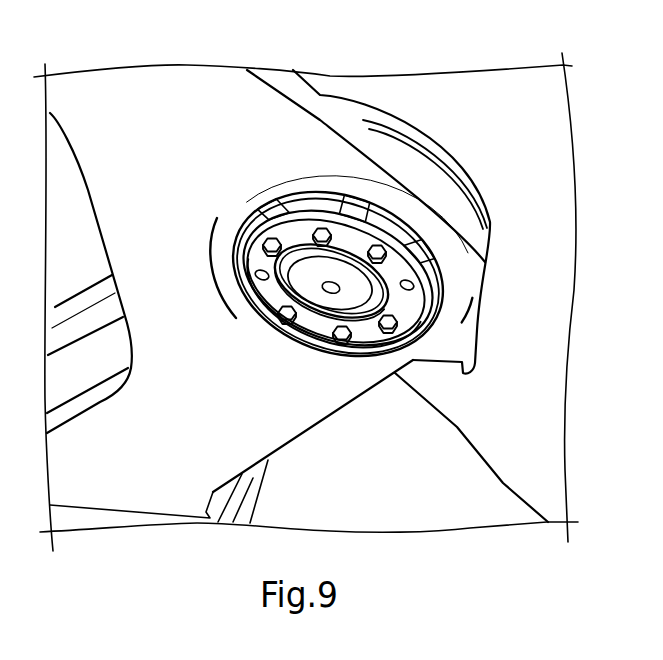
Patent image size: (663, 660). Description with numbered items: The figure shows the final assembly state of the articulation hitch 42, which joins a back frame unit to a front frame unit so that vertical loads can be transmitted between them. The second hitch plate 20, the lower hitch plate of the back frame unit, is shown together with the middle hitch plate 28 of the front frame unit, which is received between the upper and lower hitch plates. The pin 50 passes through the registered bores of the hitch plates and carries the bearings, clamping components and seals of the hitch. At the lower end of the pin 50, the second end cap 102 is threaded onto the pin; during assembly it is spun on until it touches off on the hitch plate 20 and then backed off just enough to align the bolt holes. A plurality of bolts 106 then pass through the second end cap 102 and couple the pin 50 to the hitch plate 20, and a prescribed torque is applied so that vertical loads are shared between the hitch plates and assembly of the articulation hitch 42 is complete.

The articulation hitch 42 is at (244, 207).
The pin 50 is at (308, 271).
The bolts 106 is at (286, 320).
The second end cap 102 is at (327, 353).
The second hitch plate 20 is at (312, 420).
The middle hitch plate 28 is at (457, 420).